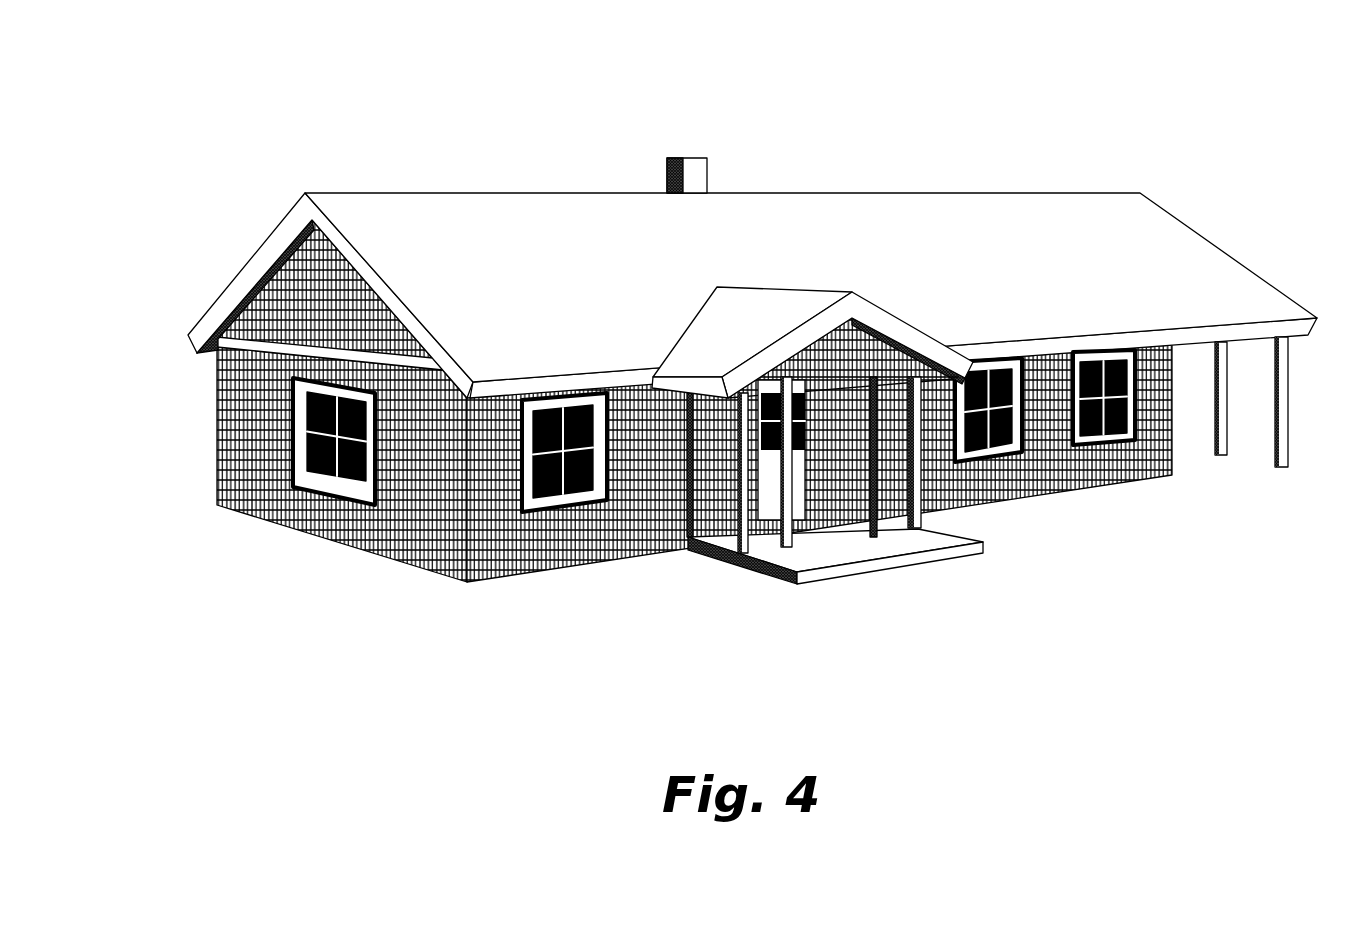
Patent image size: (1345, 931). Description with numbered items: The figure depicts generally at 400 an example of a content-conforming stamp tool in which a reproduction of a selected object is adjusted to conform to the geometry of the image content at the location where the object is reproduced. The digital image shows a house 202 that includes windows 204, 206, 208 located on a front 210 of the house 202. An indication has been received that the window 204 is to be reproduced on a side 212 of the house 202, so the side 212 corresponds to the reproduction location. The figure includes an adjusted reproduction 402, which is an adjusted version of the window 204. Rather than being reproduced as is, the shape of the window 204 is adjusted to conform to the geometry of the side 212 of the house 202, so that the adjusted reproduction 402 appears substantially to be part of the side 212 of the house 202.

The example 400 is at (225, 84).
The house 202 is at (327, 203).
The window 204 is at (545, 507).
The window 206 is at (963, 457).
The window 208 is at (1100, 438).
The front 210 is at (659, 542).
The side 212 is at (238, 485).
The adjusted reproduction 402 is at (313, 478).